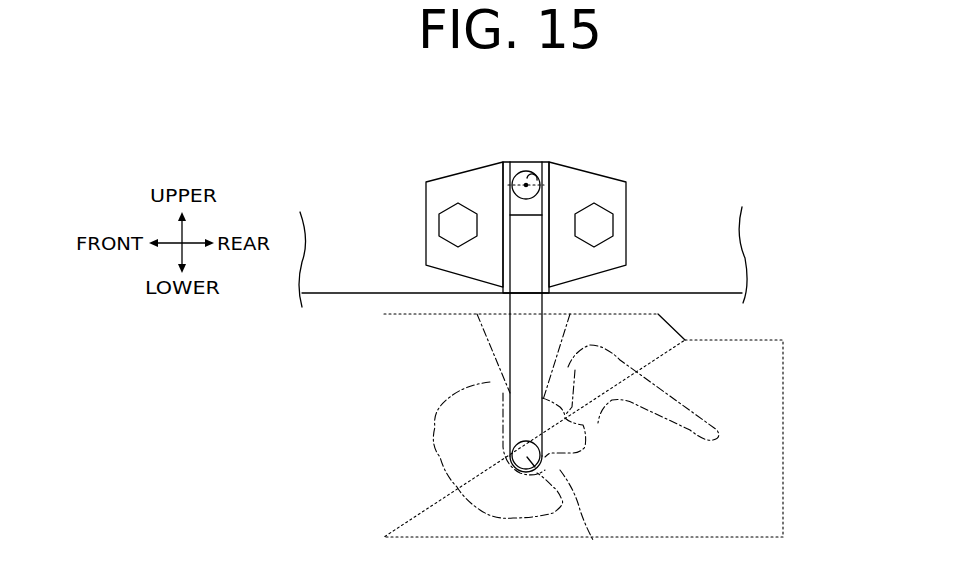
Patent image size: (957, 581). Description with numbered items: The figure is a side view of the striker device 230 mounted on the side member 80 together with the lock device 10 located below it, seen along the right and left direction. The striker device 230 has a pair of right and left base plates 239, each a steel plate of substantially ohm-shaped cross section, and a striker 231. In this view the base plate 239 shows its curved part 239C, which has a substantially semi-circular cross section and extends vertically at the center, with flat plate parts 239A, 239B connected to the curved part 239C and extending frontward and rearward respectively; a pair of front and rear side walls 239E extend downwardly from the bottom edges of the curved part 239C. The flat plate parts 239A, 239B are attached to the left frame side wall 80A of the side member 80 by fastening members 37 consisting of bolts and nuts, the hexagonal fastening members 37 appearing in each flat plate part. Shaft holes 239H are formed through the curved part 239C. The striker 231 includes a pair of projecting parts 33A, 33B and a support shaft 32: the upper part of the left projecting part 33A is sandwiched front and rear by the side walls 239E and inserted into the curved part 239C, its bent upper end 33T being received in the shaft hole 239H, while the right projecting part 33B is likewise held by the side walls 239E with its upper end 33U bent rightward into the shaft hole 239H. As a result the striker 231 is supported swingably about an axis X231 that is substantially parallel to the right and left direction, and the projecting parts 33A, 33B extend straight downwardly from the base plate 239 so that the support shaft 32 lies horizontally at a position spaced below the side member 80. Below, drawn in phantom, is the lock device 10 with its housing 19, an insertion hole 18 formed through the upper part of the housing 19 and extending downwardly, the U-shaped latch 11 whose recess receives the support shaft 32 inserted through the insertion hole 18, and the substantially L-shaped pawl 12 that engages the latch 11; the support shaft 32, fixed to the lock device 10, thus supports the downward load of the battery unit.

The lock device 10 is at (428, 541).
The latch 11 is at (443, 436).
The pawl 12 is at (706, 412).
The insertion hole 18 is at (504, 380).
The housing 19 is at (728, 537).
The support shaft 32 is at (582, 527).
The left projecting part 33A is at (405, 382).
The right projecting part 33B is at (522, 350).
The upper end of left projecting part 33T is at (449, 217).
The upper end of right projecting part 33U is at (513, 172).
The fastening member 37 is at (432, 225).
The side member 80 is at (722, 247).
The left frame side wall 80A is at (350, 263).
The striker device 230 is at (554, 158).
The striker 231 is at (405, 382).
The axis X231 is at (609, 170).
The base plate 239 is at (549, 204).
The flat plate part 239A is at (447, 188).
The flat plate part 239B is at (627, 188).
The curved part 239C is at (449, 207).
The side wall 239E is at (502, 268).
The shaft hole 239H is at (531, 172).